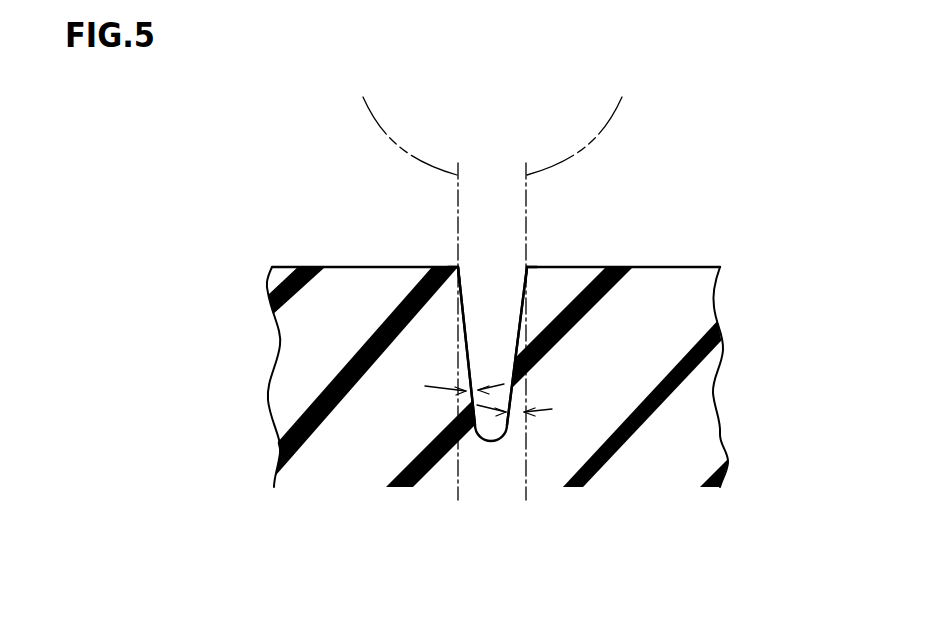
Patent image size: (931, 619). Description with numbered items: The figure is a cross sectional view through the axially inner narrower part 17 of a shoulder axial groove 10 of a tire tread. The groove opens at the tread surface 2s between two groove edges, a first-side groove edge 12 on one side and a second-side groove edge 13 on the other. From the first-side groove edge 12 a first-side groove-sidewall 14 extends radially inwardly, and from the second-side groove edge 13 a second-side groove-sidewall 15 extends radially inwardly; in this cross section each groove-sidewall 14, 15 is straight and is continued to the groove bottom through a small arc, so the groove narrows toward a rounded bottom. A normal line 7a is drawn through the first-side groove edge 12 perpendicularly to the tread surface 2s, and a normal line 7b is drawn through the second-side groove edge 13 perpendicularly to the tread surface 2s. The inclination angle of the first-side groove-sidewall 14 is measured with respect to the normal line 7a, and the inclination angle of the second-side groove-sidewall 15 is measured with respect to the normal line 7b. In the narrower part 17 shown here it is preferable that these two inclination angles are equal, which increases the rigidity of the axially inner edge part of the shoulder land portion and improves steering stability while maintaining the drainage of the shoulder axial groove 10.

The tread surface 2s is at (385, 267).
The shoulder axial groove 10 is at (490, 344).
The first-side groove edge 12 is at (528, 266).
The second-side groove edge 13 is at (457, 266).
The first-side groove-sidewall 14 is at (468, 335).
The second-side groove-sidewall 15 is at (518, 370).
The narrower part 17 is at (433, 257).
The normal line 7a is at (583, 122).
The normal line 7b is at (401, 121).